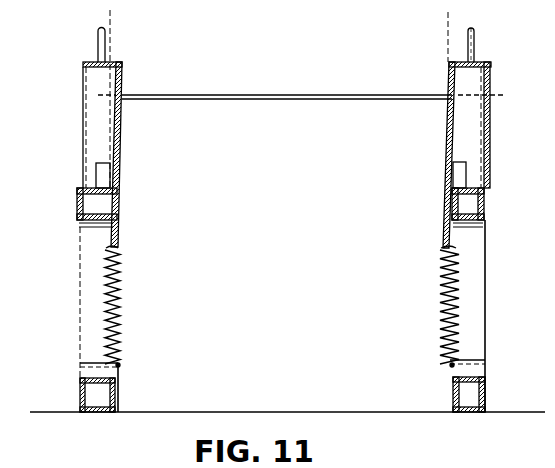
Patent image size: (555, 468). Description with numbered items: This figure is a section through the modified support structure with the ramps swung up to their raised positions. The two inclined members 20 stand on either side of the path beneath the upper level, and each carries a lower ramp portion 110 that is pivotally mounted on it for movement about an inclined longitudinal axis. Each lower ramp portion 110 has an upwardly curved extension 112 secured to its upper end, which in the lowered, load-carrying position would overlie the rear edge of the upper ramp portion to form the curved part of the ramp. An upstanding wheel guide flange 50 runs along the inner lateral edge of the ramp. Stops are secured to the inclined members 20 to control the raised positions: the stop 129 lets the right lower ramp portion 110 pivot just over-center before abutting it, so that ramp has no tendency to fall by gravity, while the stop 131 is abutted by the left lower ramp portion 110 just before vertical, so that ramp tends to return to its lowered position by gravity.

The upwardly curved extension 112 is at (467, 76).
The wheel guide flange 50 is at (488, 66).
The lower ramp portion 110 is at (453, 135).
The stop 129 is at (457, 175).
The inclined member 20 is at (488, 206).
The stop 131 is at (100, 178).